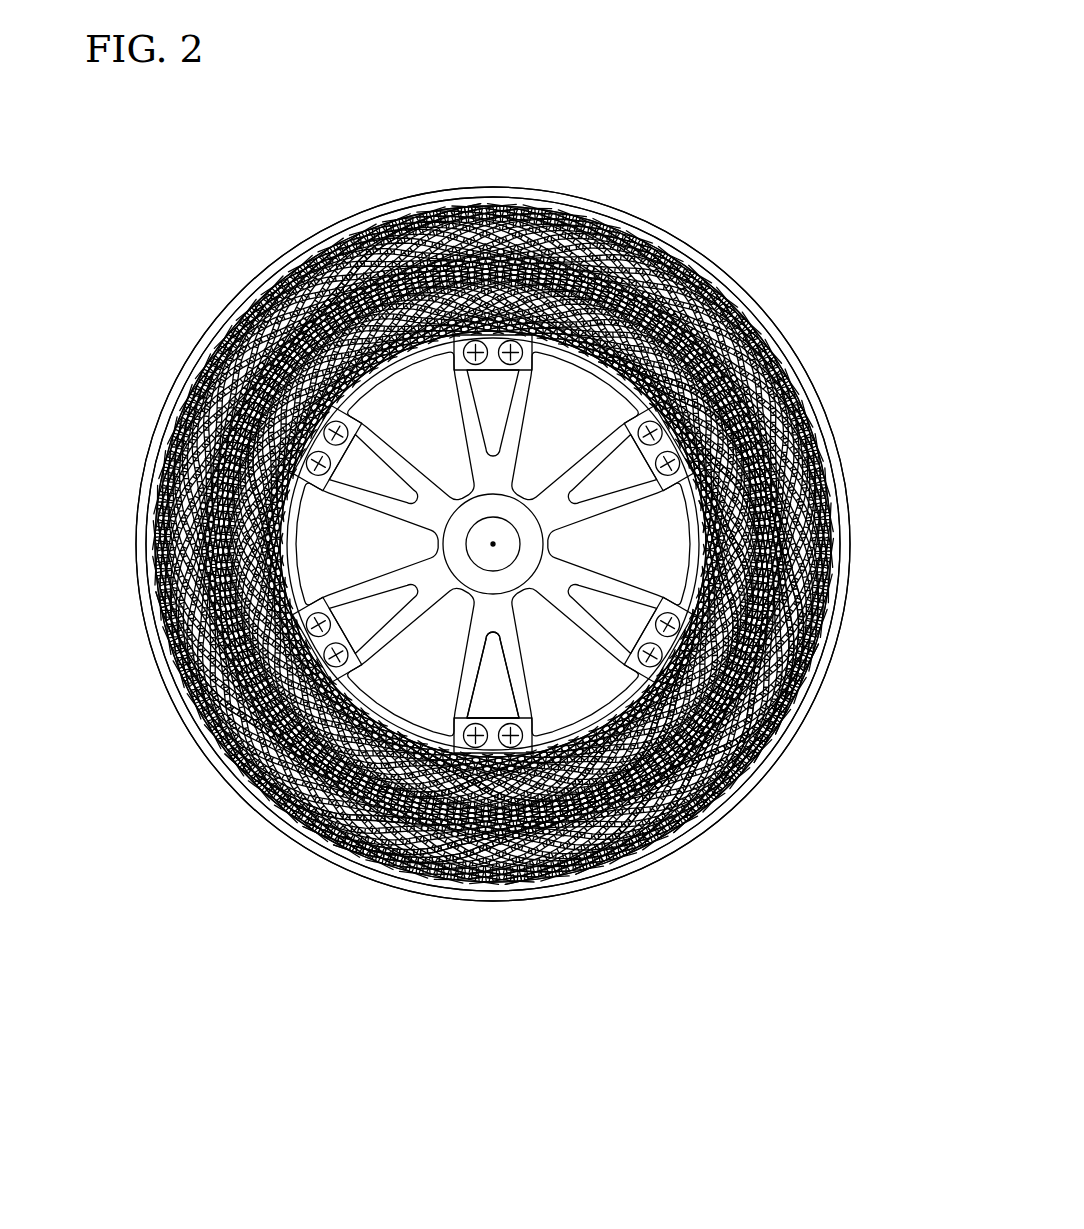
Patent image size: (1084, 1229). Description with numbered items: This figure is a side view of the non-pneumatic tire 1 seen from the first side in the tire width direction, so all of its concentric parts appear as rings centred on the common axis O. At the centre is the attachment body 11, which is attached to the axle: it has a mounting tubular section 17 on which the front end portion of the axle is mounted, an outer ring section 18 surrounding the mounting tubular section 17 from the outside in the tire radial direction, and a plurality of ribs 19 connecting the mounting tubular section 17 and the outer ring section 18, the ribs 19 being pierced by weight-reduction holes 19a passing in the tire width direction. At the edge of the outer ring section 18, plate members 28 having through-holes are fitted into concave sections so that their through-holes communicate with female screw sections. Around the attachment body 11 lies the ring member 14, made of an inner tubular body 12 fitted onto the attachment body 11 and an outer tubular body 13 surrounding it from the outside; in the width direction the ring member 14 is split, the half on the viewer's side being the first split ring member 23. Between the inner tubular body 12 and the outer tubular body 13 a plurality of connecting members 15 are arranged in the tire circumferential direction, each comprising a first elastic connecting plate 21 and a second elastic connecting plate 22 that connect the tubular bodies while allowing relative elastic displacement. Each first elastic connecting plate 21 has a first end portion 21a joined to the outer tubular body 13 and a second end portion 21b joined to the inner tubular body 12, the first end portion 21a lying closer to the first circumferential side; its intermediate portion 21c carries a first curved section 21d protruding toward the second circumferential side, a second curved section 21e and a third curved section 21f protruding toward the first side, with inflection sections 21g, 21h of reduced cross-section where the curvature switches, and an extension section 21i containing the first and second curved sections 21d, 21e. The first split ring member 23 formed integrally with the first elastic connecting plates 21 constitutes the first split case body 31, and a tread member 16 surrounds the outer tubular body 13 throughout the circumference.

The non-pneumatic tire 1 is at (790, 102).
The attachment body 11 is at (605, 605).
The inner tubular body 12 is at (556, 318).
The outer tubular body 13 is at (650, 236).
The ring member 14 is at (703, 108).
The connecting members 15 is at (482, 597).
The tread member 16 is at (497, 187).
The mounting tubular section 17 is at (530, 544).
The outer ring section 18 is at (702, 521).
The ribs 19 is at (607, 567).
The weight-reduction holes 19a is at (507, 690).
The first elastic connecting plates 21 is at (320, 265).
The first end portions 21a is at (372, 852).
The second end portions 21b is at (283, 582).
The intermediate portions 21c is at (288, 748).
The first curved sections 21d is at (728, 663).
The second curved sections 21e is at (785, 742).
The third curved sections 21f is at (630, 760).
The inflection sections 21g is at (732, 762).
The inflection sections 21h is at (690, 775).
The extension sections 21i is at (790, 636).
The second elastic connecting plates 22 is at (268, 293).
The first split ring member 23 is at (205, 750).
The plate members 28 is at (648, 415).
The first split case body 31 is at (92, 690).
The axis O is at (493, 544).